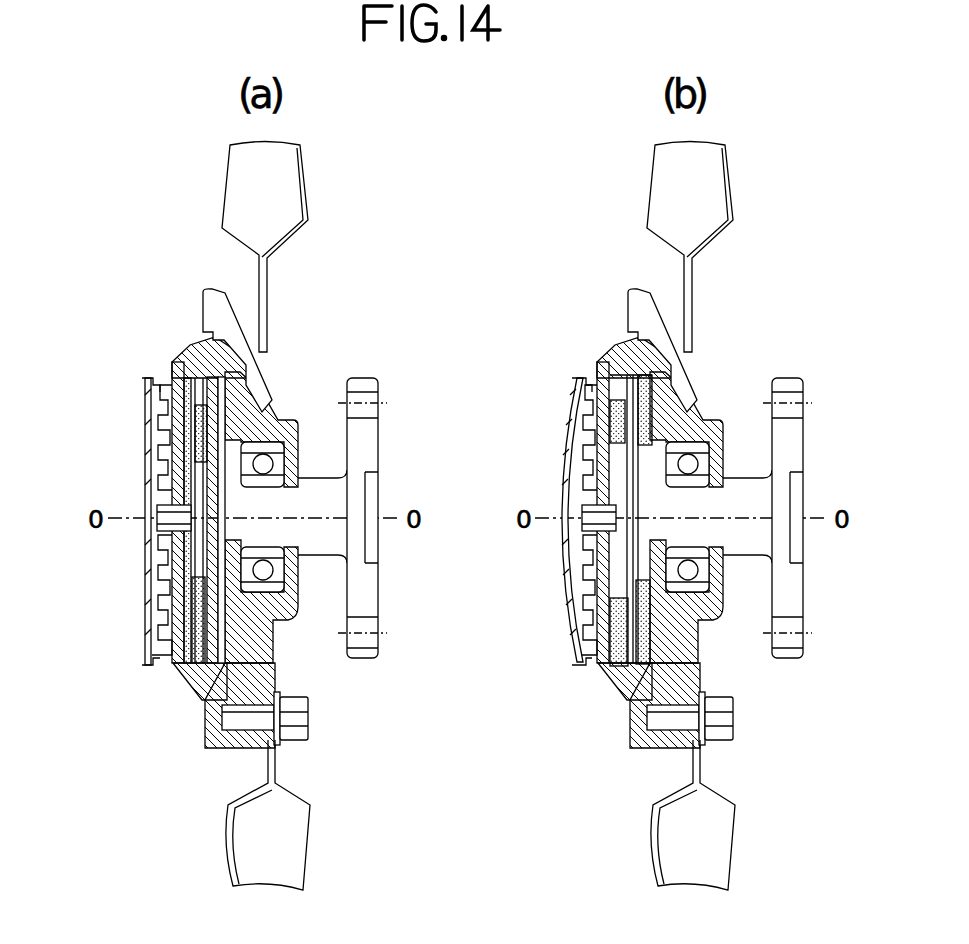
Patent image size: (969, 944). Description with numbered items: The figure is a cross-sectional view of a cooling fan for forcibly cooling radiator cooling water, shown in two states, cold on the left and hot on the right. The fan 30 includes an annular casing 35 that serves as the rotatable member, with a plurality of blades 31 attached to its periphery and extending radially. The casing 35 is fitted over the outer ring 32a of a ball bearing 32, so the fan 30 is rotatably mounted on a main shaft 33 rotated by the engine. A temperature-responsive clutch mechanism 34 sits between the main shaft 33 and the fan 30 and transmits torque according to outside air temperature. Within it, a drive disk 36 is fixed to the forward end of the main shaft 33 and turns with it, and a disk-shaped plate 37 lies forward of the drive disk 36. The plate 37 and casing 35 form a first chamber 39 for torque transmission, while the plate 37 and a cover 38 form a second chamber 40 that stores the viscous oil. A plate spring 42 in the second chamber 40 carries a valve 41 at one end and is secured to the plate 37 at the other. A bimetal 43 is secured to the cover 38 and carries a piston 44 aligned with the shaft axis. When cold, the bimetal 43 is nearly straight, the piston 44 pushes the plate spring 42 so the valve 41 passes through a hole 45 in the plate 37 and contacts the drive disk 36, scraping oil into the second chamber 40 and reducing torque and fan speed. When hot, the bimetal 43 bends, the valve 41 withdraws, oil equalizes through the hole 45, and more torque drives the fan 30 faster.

The fan 30 is at (150, 235).
The blades 31 is at (316, 178).
The ball bearing 32 is at (262, 443).
The outer ring 32a is at (270, 440).
The main shaft 33 is at (346, 492).
The temperature-responsive clutch mechanism 34 is at (121, 373).
The annular casing 35 is at (303, 623).
The drive disk 36 is at (240, 382).
The plate 37 is at (167, 505).
The cover 38 is at (177, 445).
The first chamber 39 is at (236, 641).
The second chamber 40 is at (186, 663).
The valve 41 is at (180, 362).
The plate spring 42 is at (175, 565).
The bimetal 43 is at (150, 632).
The piston 44 is at (170, 548).
The hole 45 is at (207, 289).